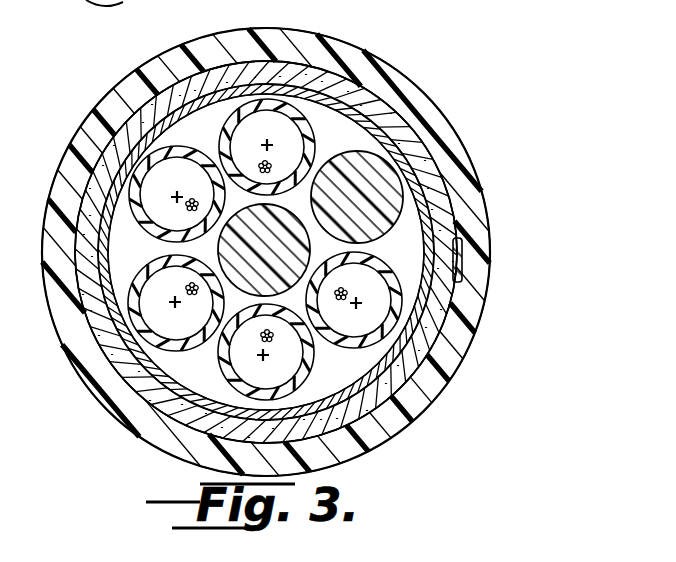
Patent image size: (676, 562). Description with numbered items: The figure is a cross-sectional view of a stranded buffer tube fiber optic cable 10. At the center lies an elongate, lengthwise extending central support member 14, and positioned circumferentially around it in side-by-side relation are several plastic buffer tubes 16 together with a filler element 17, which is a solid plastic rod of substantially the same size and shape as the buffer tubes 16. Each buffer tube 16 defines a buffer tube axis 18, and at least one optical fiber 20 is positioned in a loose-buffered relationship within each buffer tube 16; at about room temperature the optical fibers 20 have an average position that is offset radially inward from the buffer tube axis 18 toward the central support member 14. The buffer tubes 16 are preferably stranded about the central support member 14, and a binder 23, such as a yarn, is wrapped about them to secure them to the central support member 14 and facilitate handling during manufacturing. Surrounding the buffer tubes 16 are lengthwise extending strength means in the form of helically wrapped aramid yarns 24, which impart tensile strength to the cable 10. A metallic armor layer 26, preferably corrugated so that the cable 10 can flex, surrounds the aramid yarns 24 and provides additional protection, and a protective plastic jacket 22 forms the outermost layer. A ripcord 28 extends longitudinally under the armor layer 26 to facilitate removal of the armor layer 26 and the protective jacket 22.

The fiber optic cable 10 is at (505, 119).
The central support member 14 is at (345, 105).
The buffer tube 16 is at (263, 235).
The filler element 17 is at (368, 188).
The buffer tube axis 18 is at (356, 303).
The optical fiber 20 is at (265, 165).
The protective plastic jacket 22 is at (415, 117).
The binder 23 is at (180, 0).
The aramid yarns 24 is at (150, 395).
The metallic armor layer 26 is at (430, 385).
The ripcord 28 is at (458, 238).